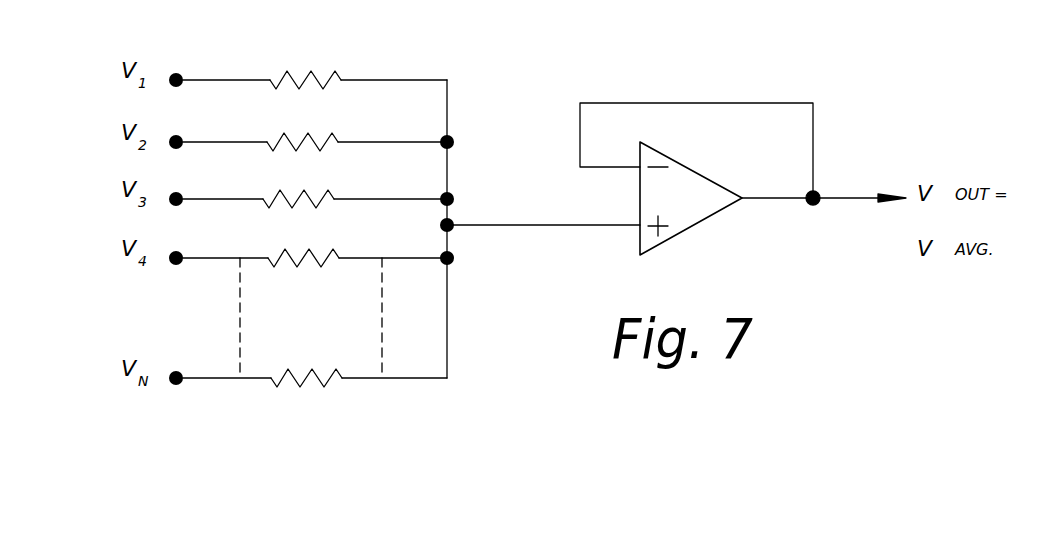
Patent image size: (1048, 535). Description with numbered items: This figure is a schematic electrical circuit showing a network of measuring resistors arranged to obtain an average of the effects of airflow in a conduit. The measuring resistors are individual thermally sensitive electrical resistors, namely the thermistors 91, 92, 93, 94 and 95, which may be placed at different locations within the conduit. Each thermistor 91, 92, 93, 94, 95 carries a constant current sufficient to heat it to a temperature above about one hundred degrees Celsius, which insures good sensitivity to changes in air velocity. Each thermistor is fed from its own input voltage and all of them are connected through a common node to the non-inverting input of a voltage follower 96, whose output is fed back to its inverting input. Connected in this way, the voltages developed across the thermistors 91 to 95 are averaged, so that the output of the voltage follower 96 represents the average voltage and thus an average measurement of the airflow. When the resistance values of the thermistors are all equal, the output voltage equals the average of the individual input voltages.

The thermistor 91 is at (337, 73).
The thermistor 92 is at (334, 135).
The thermistor 93 is at (330, 192).
The thermistor 94 is at (335, 251).
The thermistor 95 is at (336, 380).
The voltage follower 96 is at (685, 229).